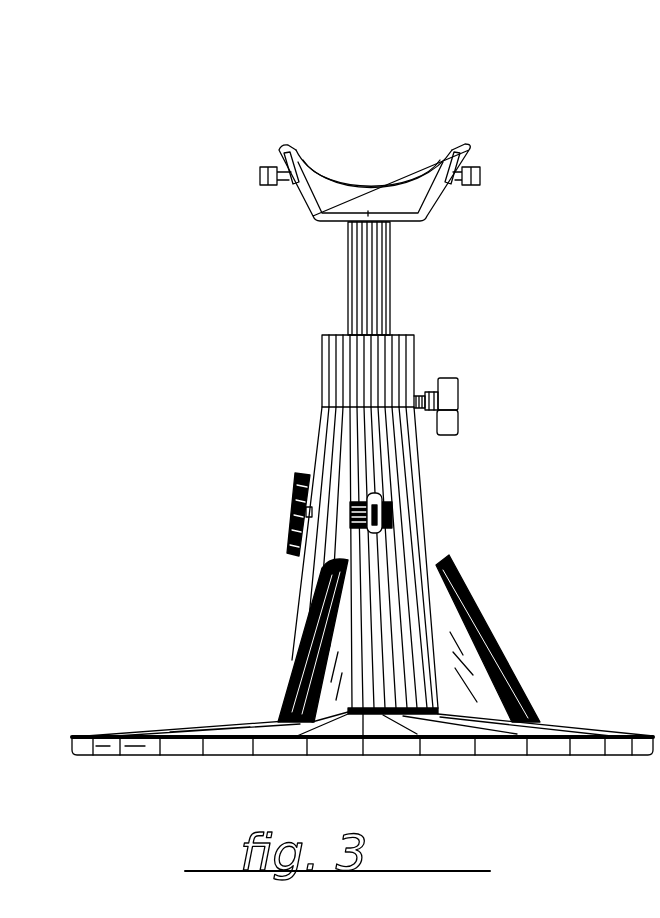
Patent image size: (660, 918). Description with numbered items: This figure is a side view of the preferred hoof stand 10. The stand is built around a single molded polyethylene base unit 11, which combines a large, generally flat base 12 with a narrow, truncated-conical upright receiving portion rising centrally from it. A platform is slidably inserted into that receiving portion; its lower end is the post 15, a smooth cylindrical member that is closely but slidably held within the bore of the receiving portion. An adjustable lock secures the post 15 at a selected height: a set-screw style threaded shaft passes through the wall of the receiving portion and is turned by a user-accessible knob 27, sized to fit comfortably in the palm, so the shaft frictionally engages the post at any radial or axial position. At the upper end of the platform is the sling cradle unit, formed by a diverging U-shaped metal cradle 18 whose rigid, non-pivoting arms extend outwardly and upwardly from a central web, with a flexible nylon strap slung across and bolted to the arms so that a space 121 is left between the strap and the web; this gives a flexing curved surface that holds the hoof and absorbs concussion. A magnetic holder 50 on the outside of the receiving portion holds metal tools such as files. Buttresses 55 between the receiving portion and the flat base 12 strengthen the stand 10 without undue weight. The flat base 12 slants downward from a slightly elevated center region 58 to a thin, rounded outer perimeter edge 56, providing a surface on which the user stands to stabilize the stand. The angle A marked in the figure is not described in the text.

The stand 10 is at (329, 399).
The polyethylene base unit 11 is at (257, 568).
The flat base 12 is at (329, 696).
The post 15 is at (364, 281).
The cradle 18 is at (379, 210).
The knob 27 is at (458, 398).
The magnetic holder 50 is at (293, 508).
The buttresses 55 is at (470, 605).
The outer perimeter edge 56 is at (72, 737).
The center region 58 is at (272, 716).
The space 121 is at (392, 206).
The angle A is at (513, 44).